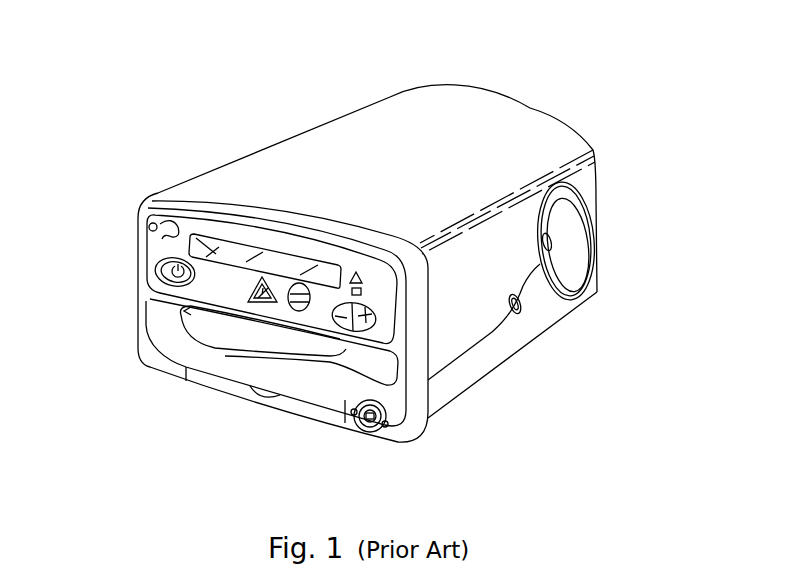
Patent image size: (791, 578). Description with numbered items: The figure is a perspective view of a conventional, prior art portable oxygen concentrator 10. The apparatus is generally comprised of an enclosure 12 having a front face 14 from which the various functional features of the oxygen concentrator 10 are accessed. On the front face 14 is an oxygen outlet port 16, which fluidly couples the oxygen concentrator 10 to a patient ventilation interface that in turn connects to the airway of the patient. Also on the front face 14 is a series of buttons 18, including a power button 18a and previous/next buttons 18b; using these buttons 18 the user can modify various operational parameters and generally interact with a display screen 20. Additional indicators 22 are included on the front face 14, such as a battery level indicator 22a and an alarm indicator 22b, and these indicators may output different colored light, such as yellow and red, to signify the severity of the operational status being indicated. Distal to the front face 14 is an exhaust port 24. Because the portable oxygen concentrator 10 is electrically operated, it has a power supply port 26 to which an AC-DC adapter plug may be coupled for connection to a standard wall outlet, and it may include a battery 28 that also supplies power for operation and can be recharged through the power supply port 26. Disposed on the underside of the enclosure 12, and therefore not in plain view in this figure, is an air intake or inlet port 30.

The portable oxygen concentrator 10 is at (586, 92).
The enclosure 12 is at (486, 357).
The front face 14 is at (136, 376).
The oxygen outlet port 16 is at (371, 432).
The buttons 18 is at (236, 322).
The power button 18a is at (155, 273).
The previous/next buttons 18b is at (340, 321).
The display screen 20 is at (227, 256).
The indicators 22 is at (263, 208).
The battery level indicator 22a is at (299, 283).
The alarm indicator 22b is at (250, 290).
The exhaust port 24 is at (562, 260).
The power supply port 26 is at (522, 312).
The battery 28 is at (318, 413).
The air intake or inlet port 30 is at (438, 441).